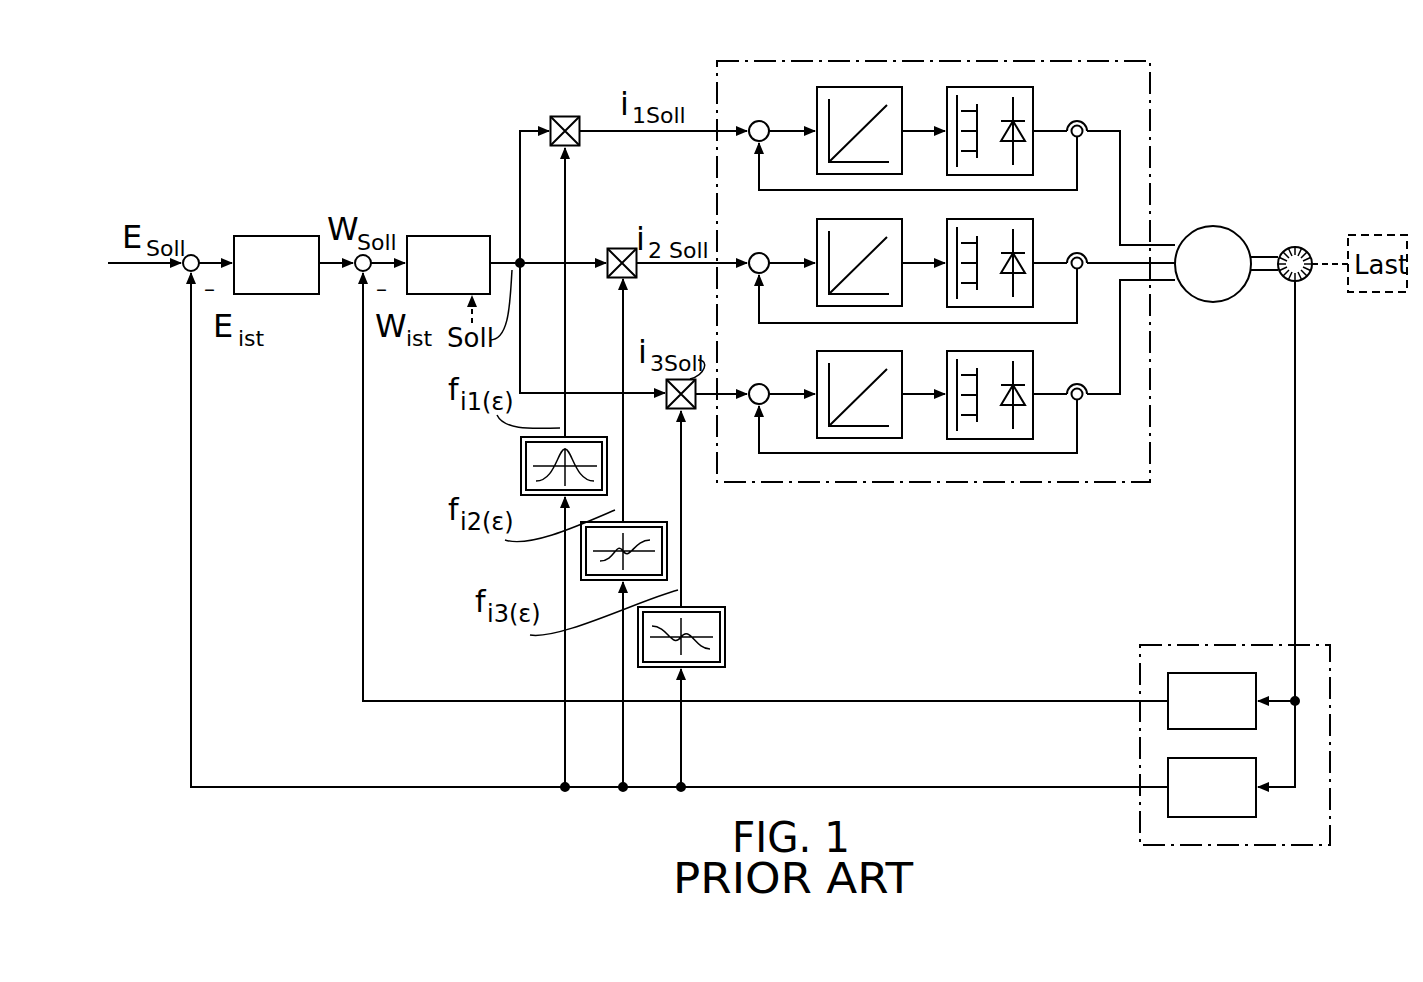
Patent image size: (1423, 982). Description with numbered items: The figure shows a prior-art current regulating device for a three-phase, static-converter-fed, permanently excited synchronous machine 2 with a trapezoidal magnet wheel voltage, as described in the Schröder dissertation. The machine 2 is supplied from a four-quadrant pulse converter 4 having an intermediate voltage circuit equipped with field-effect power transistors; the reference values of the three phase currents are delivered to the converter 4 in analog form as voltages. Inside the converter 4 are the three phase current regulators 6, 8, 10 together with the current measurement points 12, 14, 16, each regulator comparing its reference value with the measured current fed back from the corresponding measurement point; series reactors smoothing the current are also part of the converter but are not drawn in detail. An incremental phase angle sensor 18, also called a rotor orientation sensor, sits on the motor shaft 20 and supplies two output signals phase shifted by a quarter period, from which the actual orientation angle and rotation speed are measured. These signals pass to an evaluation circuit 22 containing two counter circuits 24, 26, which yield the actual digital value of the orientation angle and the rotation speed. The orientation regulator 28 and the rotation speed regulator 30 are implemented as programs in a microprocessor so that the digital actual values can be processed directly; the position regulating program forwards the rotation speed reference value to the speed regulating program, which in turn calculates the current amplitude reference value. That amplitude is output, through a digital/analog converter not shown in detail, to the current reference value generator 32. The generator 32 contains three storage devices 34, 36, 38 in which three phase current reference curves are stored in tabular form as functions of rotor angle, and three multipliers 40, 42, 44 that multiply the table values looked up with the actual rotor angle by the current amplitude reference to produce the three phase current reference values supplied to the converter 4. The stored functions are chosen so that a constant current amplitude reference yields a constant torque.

The machine 2 is at (1213, 226).
The four-quadrant pulse converter 4 is at (1012, 482).
The phase current regulator 6 is at (902, 117).
The phase current regulator 8 is at (902, 249).
The phase current regulator 10 is at (928, 375).
The current measurement point 12 is at (1077, 117).
The current measurement point 14 is at (1067, 256).
The current measurement point 16 is at (1068, 388).
The incremental phase angle sensor 18 is at (1297, 247).
The motor shaft 20 is at (1268, 271).
The evaluation circuit 22 is at (1240, 645).
The counter circuit 24 is at (1238, 817).
The counter circuit 26 is at (1245, 673).
The orientation regulator 28 is at (258, 236).
The rotation speed regulator 30 is at (447, 236).
The current reference value generator 32 is at (637, 533).
The storage device 34 is at (573, 437).
The storage device 36 is at (630, 522).
The storage device 38 is at (697, 607).
The multiplier 40 is at (565, 117).
The multiplier 42 is at (622, 248).
The multiplier 44 is at (697, 400).